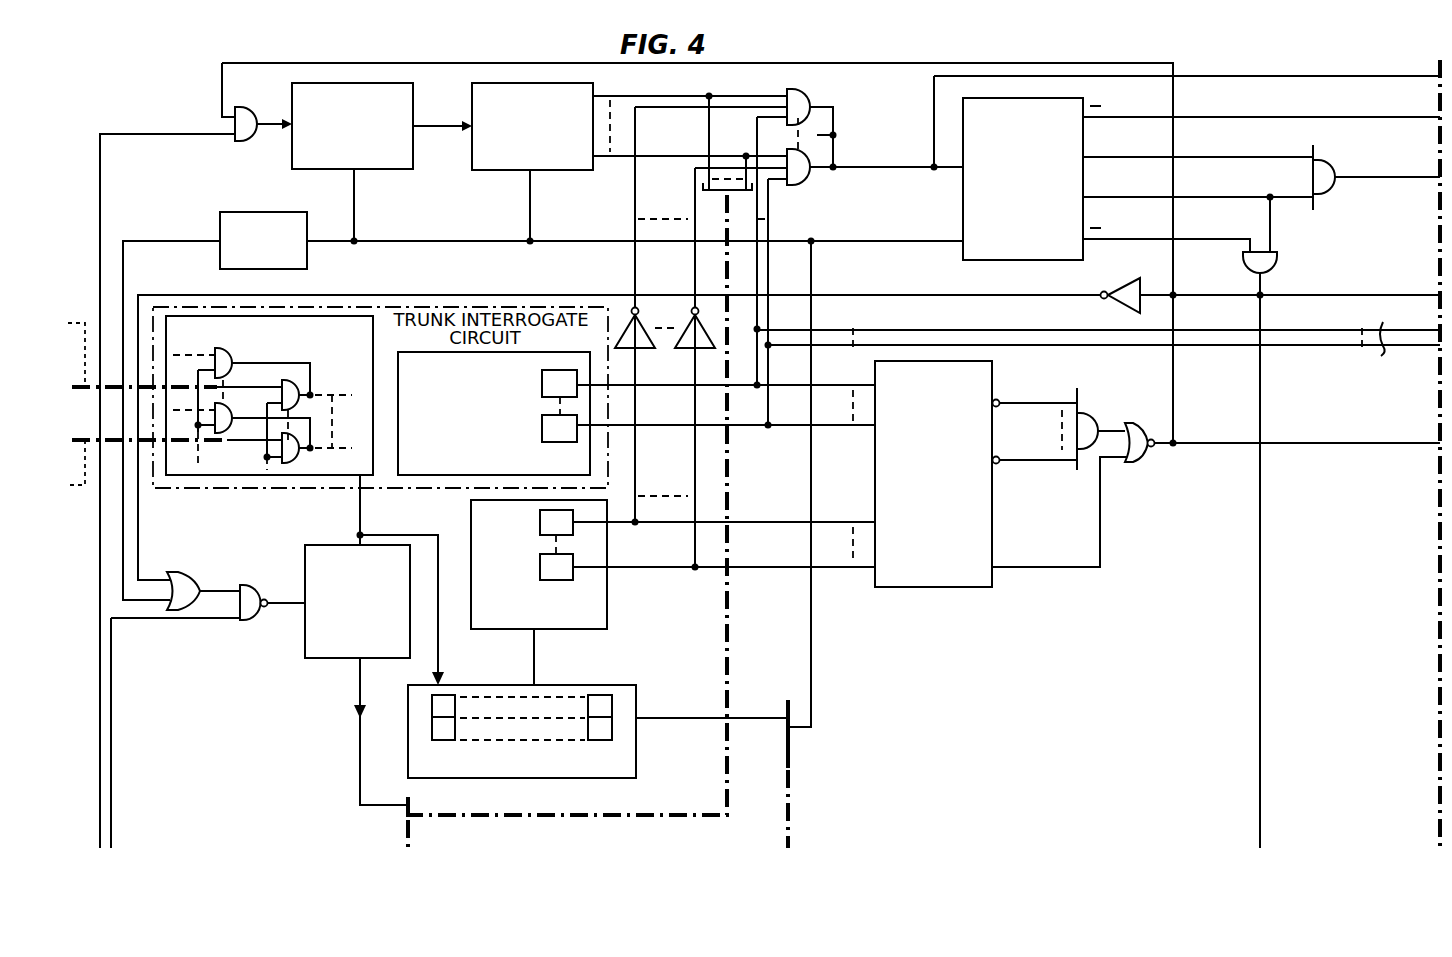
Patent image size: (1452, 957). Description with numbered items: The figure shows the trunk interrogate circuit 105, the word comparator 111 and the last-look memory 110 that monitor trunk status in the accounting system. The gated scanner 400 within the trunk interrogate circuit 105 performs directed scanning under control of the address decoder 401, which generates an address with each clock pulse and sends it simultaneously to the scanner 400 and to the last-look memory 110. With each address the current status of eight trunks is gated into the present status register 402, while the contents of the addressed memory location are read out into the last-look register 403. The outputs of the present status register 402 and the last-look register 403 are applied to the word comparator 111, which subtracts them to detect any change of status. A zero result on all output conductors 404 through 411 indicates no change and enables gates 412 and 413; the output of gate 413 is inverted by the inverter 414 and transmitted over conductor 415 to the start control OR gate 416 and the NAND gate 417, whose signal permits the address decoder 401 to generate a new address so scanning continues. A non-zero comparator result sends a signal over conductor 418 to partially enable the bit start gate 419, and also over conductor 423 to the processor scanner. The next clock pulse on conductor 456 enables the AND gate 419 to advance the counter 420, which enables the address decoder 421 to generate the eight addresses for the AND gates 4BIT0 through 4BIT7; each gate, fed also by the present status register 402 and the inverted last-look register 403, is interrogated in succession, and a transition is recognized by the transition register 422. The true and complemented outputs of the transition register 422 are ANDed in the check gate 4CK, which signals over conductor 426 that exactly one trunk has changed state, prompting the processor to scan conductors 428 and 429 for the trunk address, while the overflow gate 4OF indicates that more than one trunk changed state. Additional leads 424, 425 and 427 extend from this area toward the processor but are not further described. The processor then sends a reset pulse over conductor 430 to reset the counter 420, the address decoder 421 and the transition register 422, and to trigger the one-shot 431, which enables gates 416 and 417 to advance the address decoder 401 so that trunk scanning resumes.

The conductor 456 is at (110, 130).
The bit start gate 419 is at (245, 145).
The counter 420 is at (384, 169).
The address decoder 421 is at (492, 170).
The one-shot 431 is at (240, 190).
The conductor 418 is at (915, 55).
The AND gate 4BIT0 is at (804, 92).
The AND gate 4BIT7 is at (808, 186).
The transition register 422 is at (1020, 260).
The lead 424 is at (1358, 117).
The lead 425 is at (1358, 175).
The overflow gate 4OF is at (1325, 200).
The check gate 4CK is at (1278, 260).
The conductor 426 is at (1358, 293).
The inverter 414 is at (1118, 285).
The conductor 415 is at (890, 293).
The leads 427 is at (1098, 352).
The conductor 423 is at (1354, 441).
The gated scanner 400 is at (269, 420).
The trunk interrogate circuit 105 is at (293, 488).
The present status register 402 is at (437, 475).
The last-look register 403 is at (607, 614).
The last-look memory 110 is at (545, 683).
The conductor 430 is at (811, 714).
The conductor 428 is at (444, 813).
The address decoder 401 is at (352, 675).
The conductor 429 is at (358, 790).
The start control OR gate 416 is at (190, 568).
The NAND gate 417 is at (252, 622).
The word comparator 111 is at (935, 587).
The output conductor 404 is at (1035, 395).
The output conductor 411 is at (1035, 437).
The gate 412 is at (1092, 416).
The gate 413 is at (1148, 462).